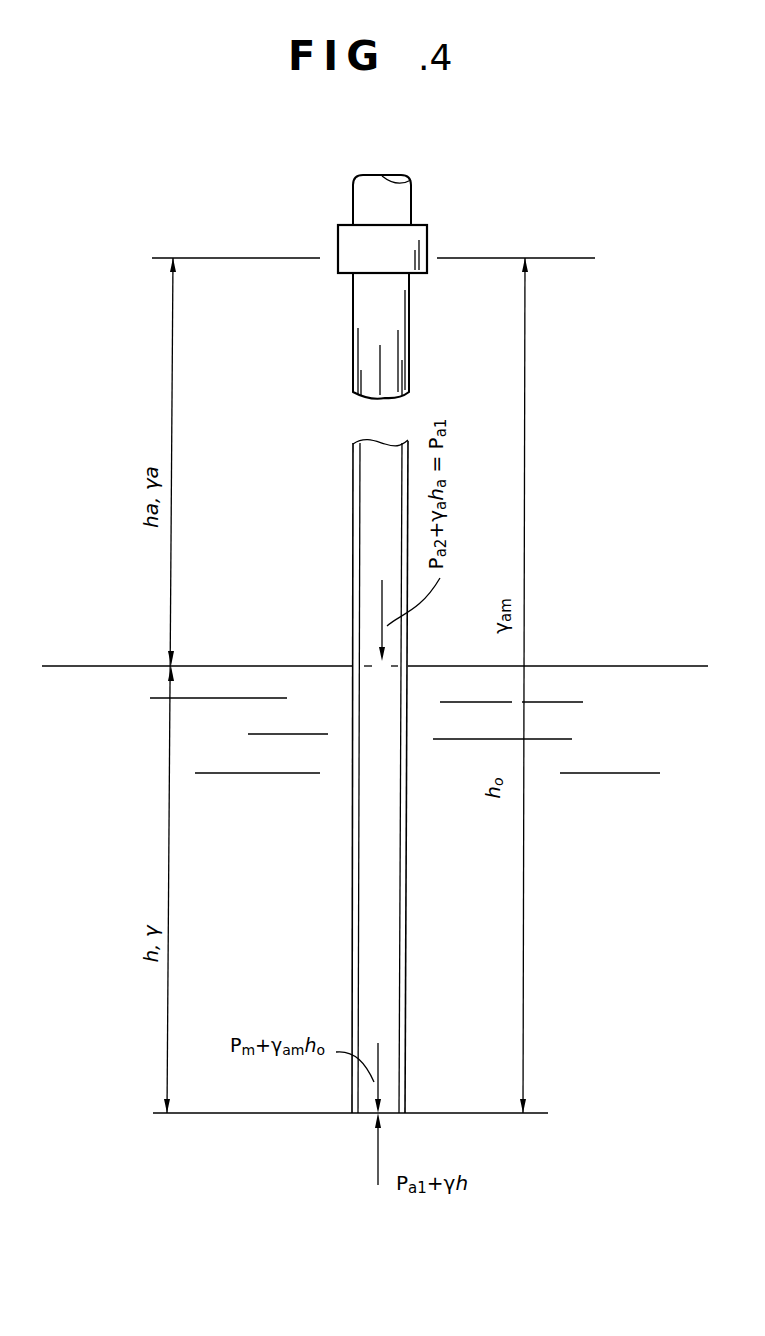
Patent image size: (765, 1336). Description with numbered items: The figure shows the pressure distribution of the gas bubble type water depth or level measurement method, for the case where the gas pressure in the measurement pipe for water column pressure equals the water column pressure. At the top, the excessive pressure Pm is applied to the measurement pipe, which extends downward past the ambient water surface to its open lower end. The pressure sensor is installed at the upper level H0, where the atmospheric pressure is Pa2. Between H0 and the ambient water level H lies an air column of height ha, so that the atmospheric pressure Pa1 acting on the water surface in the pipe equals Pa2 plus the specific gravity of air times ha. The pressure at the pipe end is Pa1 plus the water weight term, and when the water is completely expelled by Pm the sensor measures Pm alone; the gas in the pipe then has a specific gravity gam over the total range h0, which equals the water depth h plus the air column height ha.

The excessive pressure Pm is at (381, 155).
The pressure sensor installation level H0 is at (236, 245).
The atmospheric pressure at H0 Pa2 is at (516, 243).
The atmospheric pressure at H Pa1 is at (270, 567).
The specific gravity of gas in measurement pipe gam is at (380, 776).
The total height h0 is at (350, 1101).